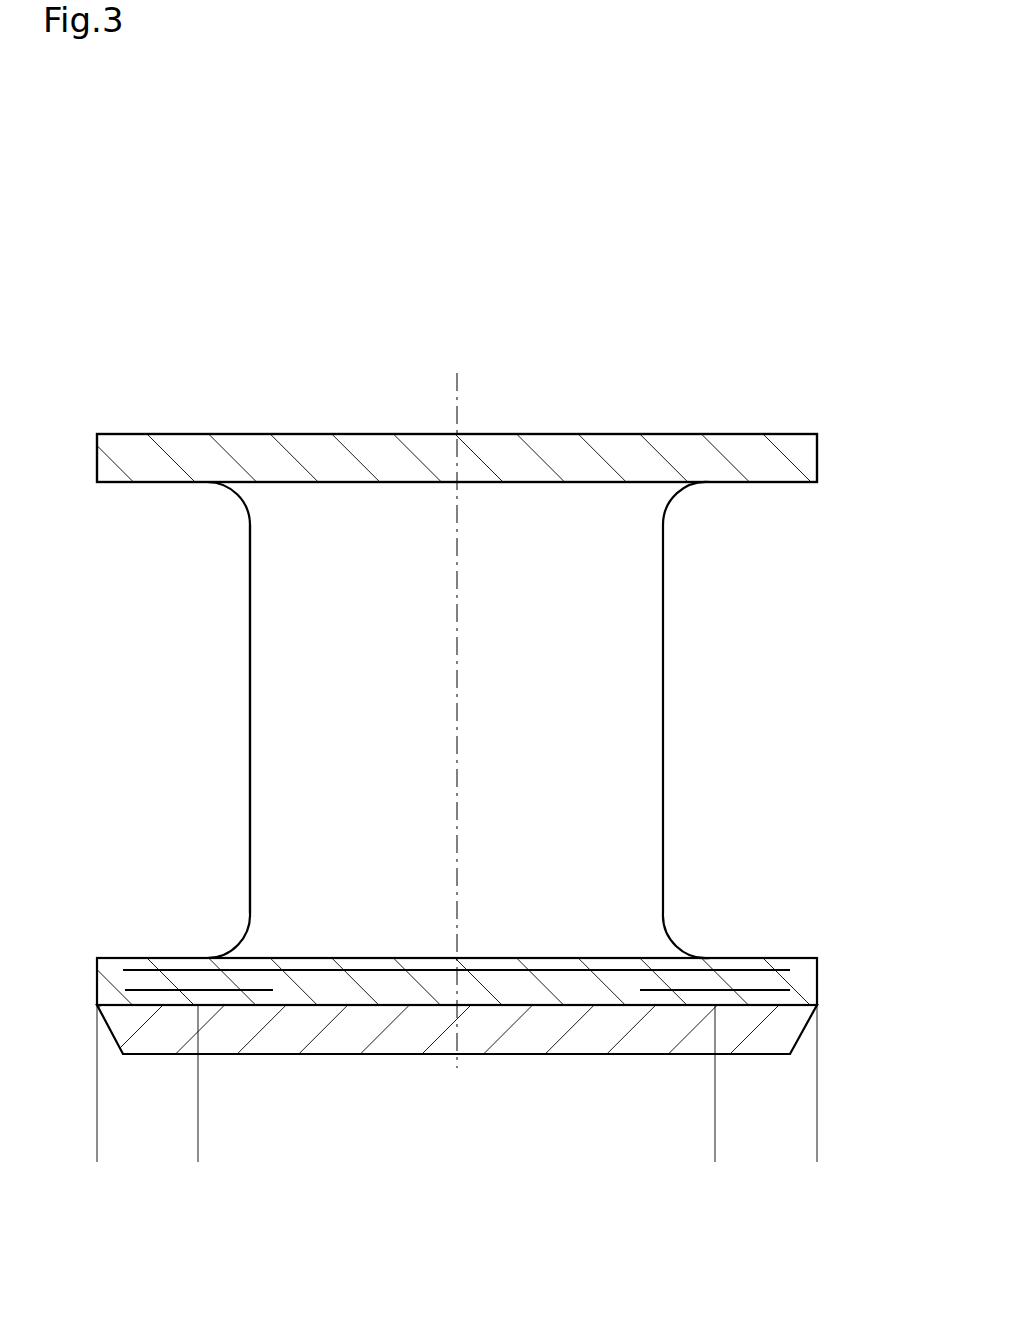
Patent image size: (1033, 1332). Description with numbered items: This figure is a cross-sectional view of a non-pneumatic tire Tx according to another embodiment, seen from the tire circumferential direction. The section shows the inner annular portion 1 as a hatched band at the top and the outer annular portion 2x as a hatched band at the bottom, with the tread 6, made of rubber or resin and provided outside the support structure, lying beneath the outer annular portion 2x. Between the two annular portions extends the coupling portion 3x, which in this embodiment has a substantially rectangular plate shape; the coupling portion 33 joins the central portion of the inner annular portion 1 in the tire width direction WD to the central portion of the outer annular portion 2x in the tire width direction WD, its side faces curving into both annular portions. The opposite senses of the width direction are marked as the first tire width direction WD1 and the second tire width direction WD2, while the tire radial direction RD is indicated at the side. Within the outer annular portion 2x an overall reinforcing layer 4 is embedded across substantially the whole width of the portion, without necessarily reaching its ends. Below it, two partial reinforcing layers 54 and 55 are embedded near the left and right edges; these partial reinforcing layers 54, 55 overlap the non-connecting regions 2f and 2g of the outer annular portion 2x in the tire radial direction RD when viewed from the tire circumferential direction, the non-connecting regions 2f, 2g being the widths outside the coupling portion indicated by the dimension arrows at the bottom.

The inner annular portion 1 is at (817, 458).
The outer annular portion 2x is at (817, 985).
The coupling portion 3x is at (173, 727).
The coupling portion 33 is at (250, 843).
The overall reinforcing layer 4 is at (765, 965).
The partial reinforcing layer 54 is at (155, 995).
The partial reinforcing layer 55 is at (760, 992).
The tread 6 is at (805, 1028).
The non-pneumatic tire Tx is at (325, 328).
The non-connecting region 2f is at (198, 1155).
The non-connecting region 2g is at (817, 1155).
The tire width direction WD is at (750, 348).
The first tire width direction WD1 is at (745, 397).
The second tire width direction WD2 is at (170, 397).
The tire radial direction RD is at (893, 513).